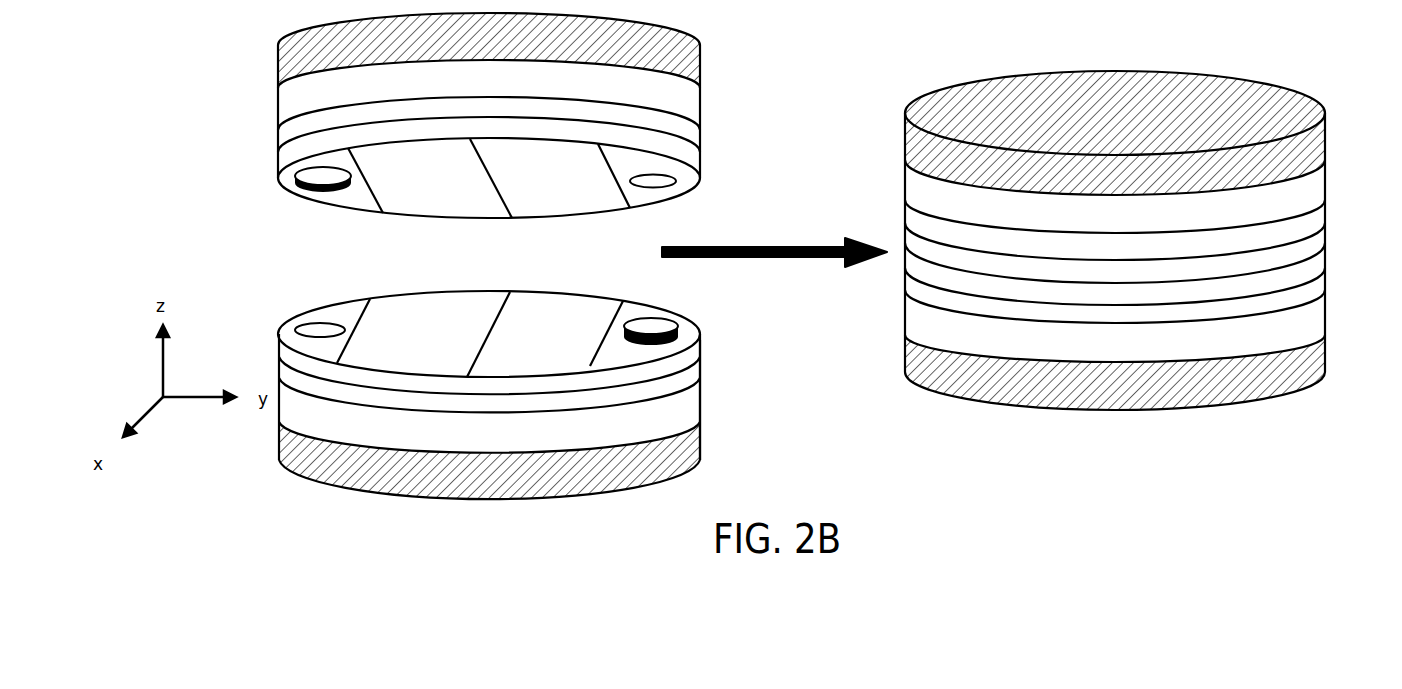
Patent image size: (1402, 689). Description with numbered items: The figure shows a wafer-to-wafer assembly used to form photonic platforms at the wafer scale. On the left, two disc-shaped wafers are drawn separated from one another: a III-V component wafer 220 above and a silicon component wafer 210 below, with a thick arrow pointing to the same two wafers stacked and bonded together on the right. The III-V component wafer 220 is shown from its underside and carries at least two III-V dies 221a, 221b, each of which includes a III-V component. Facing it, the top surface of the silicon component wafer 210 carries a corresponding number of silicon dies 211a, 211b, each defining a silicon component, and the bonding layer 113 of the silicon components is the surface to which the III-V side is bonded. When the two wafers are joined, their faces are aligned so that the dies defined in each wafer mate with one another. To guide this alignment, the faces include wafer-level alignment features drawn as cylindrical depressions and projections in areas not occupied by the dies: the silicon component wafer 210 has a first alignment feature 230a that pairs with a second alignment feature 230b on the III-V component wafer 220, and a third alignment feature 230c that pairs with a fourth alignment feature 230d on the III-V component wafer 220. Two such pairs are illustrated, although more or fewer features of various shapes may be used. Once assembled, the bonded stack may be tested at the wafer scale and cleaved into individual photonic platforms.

The III-V component wafer 220 is at (278, 53).
The silicon component wafer 210 is at (280, 443).
The III-V die 221a is at (418, 193).
The III-V die 221b is at (592, 193).
The silicon die 211a is at (397, 327).
The silicon die 211b is at (520, 327).
The first alignment feature 230a is at (280, 330).
The second alignment feature 230b is at (287, 178).
The third alignment feature 230c is at (650, 328).
The fourth alignment feature 230d is at (677, 182).
The bonding layer 113 is at (700, 353).